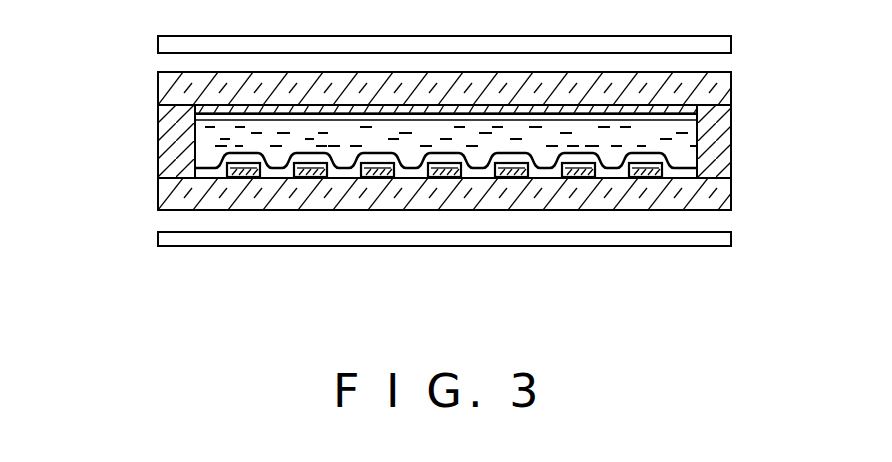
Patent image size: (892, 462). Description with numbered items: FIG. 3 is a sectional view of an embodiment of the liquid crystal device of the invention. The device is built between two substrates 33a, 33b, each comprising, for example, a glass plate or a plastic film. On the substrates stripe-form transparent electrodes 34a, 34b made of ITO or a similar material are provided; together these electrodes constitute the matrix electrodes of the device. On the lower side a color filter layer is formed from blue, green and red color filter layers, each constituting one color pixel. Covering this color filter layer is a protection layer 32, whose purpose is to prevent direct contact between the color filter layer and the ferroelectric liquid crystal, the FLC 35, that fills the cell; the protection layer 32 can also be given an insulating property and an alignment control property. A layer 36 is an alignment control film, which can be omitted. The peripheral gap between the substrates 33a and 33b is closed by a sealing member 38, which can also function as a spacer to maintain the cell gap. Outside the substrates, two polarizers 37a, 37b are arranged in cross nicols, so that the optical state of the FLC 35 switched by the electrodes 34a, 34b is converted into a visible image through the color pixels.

The protection layer 32 is at (222, 169).
The substrate 33a is at (719, 92).
The substrate 33b is at (718, 196).
The transparent electrode 34a is at (700, 112).
The transparent electrode 34b is at (665, 153).
The FLC 35 is at (205, 140).
The alignment control film 36 is at (190, 114).
The polarizer 37a is at (157, 45).
The polarizer 37b is at (552, 238).
The sealing member 38 is at (719, 160).